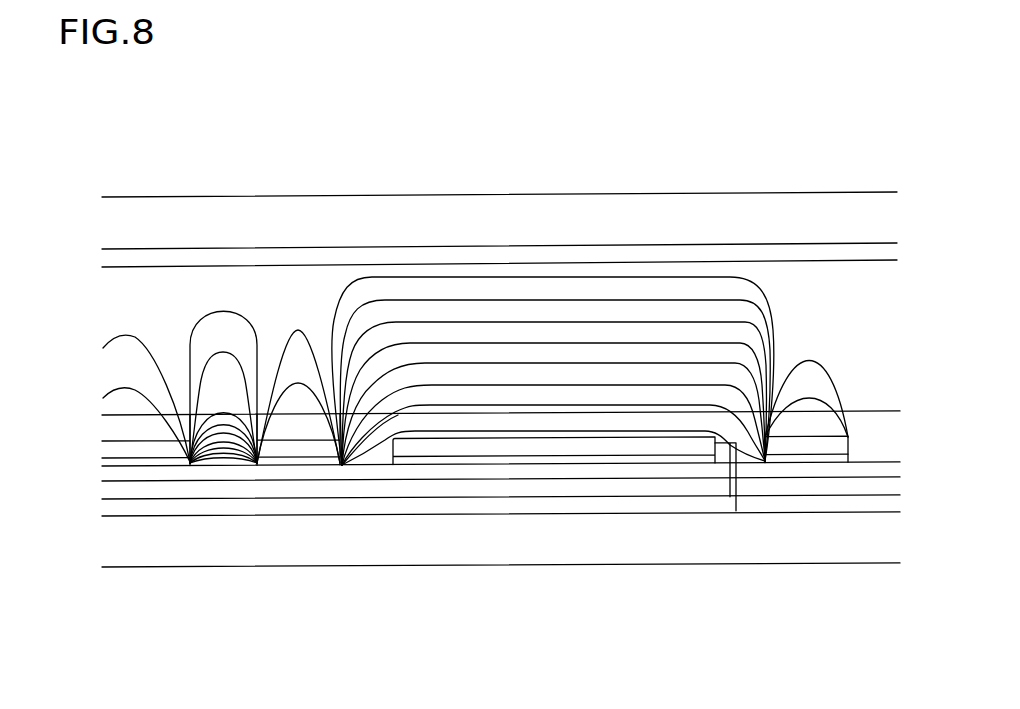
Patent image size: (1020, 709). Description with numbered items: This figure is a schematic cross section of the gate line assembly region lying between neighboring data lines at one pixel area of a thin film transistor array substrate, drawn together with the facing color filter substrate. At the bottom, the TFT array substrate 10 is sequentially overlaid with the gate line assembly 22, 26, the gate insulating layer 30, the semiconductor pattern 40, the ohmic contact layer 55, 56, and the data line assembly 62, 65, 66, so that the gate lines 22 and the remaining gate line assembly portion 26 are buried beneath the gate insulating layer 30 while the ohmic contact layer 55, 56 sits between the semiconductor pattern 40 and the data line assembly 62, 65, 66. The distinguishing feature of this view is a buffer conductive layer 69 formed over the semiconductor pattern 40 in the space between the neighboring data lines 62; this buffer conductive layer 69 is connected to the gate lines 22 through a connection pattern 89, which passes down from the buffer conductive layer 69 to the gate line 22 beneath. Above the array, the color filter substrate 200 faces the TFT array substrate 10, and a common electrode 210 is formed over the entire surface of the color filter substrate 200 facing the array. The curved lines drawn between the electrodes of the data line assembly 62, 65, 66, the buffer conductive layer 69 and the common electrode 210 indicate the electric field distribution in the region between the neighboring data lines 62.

The TFT array substrate 10 is at (395, 557).
The gate line 22 is at (455, 503).
The gate line assembly portion 26 is at (207, 508).
The gate insulating layer 30 is at (496, 488).
The semiconductor pattern 40 is at (605, 473).
The ohmic contact layer 55 is at (167, 462).
The ohmic contact layer 56 is at (328, 462).
The data line 62 is at (800, 443).
The data line assembly electrode 65 is at (121, 452).
The data line assembly electrode 66 is at (292, 450).
The buffer conductive layer 69 is at (650, 445).
The connection pattern 89 is at (737, 495).
The color filter substrate 200 is at (408, 212).
The common electrode 210 is at (543, 252).